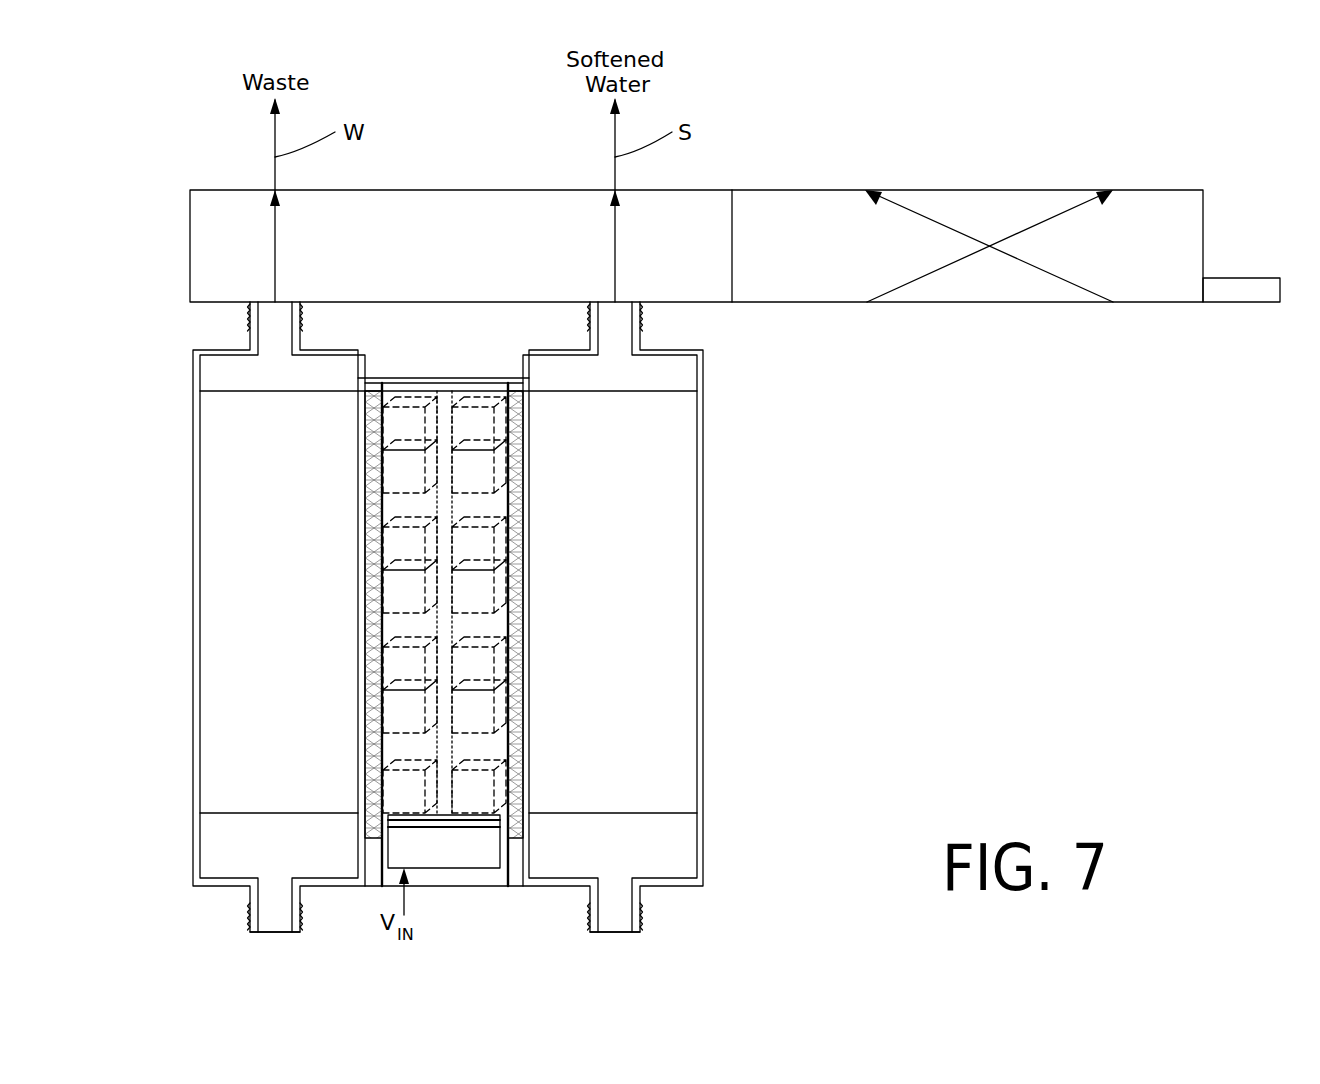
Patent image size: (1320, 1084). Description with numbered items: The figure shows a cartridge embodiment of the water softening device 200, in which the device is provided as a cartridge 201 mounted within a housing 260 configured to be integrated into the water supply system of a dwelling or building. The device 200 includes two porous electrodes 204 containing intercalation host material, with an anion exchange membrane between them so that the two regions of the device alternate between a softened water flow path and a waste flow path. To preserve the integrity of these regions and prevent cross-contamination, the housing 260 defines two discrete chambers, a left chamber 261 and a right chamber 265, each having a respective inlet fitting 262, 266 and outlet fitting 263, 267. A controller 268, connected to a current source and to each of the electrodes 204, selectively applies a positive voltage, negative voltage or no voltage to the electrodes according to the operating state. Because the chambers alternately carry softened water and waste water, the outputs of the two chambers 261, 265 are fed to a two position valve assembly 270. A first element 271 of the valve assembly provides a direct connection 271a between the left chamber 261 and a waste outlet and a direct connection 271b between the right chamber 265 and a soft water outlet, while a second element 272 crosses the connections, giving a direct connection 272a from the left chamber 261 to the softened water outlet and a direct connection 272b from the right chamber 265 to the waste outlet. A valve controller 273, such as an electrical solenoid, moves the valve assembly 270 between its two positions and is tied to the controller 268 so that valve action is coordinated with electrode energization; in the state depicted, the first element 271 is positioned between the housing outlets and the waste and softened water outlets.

The device for softening water 200 is at (576, 388).
The cartridge 201 is at (690, 588).
The porous electrodes 204 is at (370, 472).
The housing 260 is at (507, 617).
The left chamber 261 is at (235, 846).
The inlet fitting 262 is at (268, 927).
The outlet fitting 263 is at (272, 313).
The right chamber 265 is at (680, 843).
The inlet fitting 266 is at (615, 927).
The outlet fitting 267 is at (622, 313).
The controller 268 is at (448, 846).
The two position valve assembly 270 is at (782, 188).
The first element 271 is at (492, 200).
The direct connection 271a is at (275, 228).
The direct connection 271b is at (615, 230).
The second element 272 is at (986, 207).
The direct connection 272a is at (907, 282).
The direct connection 272b is at (1068, 282).
The valve controller 273 is at (1241, 290).